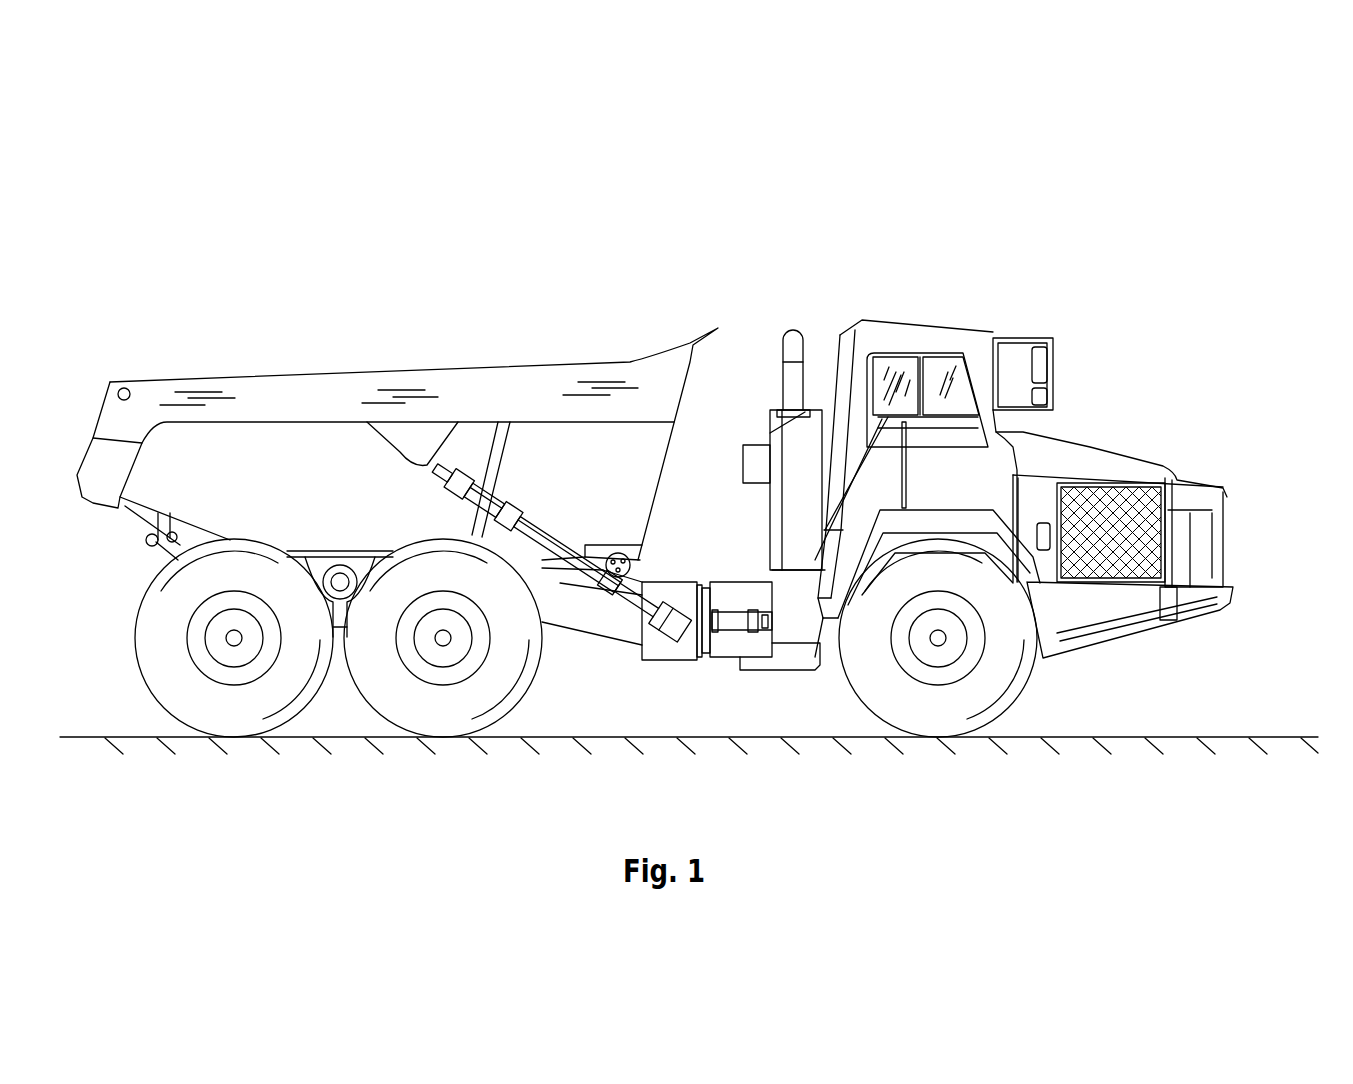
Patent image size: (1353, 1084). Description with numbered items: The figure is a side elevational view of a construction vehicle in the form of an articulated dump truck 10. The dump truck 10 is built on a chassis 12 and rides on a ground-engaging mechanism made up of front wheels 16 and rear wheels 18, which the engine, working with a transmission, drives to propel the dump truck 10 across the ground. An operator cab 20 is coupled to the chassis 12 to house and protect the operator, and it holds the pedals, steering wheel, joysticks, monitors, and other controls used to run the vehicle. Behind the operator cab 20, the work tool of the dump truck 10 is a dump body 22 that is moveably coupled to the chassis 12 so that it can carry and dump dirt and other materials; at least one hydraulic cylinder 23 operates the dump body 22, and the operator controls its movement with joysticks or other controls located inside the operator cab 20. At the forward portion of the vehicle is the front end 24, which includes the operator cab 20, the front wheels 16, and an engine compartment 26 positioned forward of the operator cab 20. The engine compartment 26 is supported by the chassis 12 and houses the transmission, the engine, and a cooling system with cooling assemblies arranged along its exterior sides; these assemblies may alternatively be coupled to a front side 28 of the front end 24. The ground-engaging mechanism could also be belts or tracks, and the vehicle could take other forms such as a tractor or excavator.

The articulated dump truck 10 is at (990, 253).
The chassis 12 is at (838, 680).
The front wheels 16 is at (1013, 730).
The rear wheels 18 is at (353, 754).
The operator cab 20 is at (907, 327).
The dump body 22 is at (292, 357).
The hydraulic cylinder 23 is at (459, 490).
The front end 24 is at (1227, 512).
The engine compartment 26 is at (1127, 443).
The front side 28 is at (1227, 553).